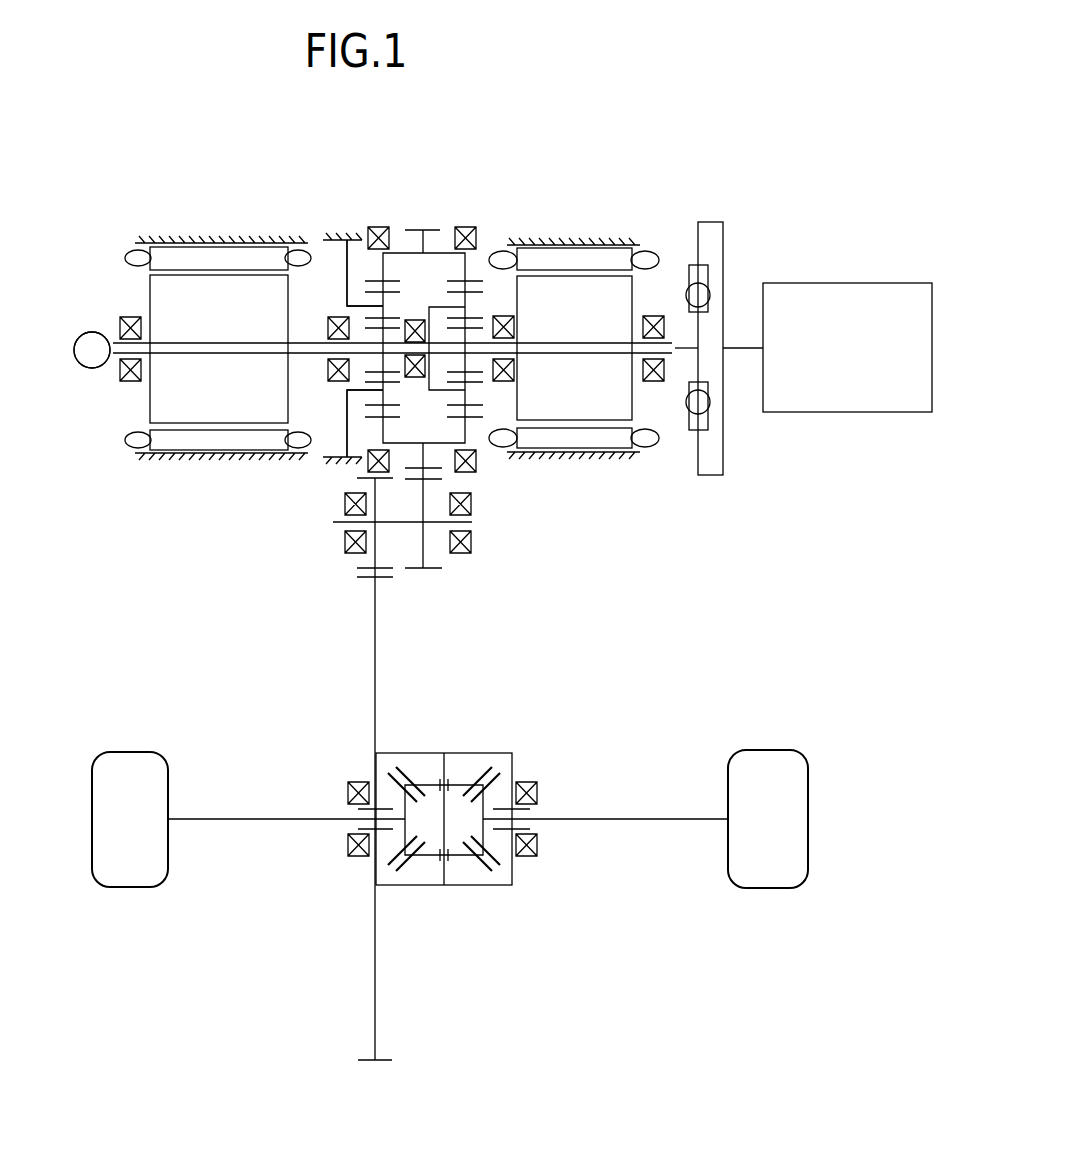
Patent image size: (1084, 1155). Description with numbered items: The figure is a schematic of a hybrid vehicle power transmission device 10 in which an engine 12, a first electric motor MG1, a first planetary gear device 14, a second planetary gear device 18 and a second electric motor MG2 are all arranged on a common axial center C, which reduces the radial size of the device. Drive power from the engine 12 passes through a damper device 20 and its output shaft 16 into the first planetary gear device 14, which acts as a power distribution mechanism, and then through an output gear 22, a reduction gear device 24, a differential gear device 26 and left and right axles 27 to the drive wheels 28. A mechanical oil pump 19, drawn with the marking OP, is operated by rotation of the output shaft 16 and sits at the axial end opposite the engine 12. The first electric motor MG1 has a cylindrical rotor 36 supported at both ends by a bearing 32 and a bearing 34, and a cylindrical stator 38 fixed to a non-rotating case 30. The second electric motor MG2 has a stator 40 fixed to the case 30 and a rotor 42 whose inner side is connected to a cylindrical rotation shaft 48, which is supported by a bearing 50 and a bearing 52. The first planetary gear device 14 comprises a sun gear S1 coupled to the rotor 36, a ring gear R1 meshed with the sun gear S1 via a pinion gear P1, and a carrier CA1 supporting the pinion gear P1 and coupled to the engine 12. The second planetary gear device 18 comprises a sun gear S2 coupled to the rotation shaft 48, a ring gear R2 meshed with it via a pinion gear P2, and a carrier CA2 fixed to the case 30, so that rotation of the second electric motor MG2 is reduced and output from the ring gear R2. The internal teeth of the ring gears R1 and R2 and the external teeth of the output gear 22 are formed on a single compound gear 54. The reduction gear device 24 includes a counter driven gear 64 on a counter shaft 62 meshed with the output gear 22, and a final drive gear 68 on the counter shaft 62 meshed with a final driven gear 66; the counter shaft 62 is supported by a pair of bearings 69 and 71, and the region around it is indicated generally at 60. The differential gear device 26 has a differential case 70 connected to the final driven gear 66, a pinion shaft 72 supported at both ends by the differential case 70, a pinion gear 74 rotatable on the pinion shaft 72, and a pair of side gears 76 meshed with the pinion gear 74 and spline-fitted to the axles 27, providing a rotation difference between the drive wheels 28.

The hybrid vehicle power transmission device 10 is at (795, 269).
The engine 12 is at (823, 297).
The first planetary gear device 14 is at (447, 310).
The output shaft 16 is at (683, 345).
The second planetary gear device 18 is at (380, 308).
The mechanical oil pump 19 is at (87, 365).
The damper device 20 is at (737, 235).
The output gear 22 is at (413, 221).
The reduction gear device 24 is at (480, 578).
The differential gear device 26 is at (442, 792).
The axles 27 is at (235, 821).
The drive wheels 28 is at (133, 762).
The case 30 is at (198, 240).
The bearing 32 is at (648, 382).
The bearing 34 is at (500, 316).
The rotor 36 is at (602, 397).
The stator 38 is at (550, 441).
The stator 40 is at (163, 446).
The rotor 42 is at (158, 300).
The rotation shaft 48 is at (303, 340).
The bearing 50 is at (337, 382).
The bearing 52 is at (128, 381).
The compound gear 54 is at (485, 215).
The counter gear mechanism 60 is at (388, 529).
The counter shaft 62 is at (336, 527).
The counter driven gear 64 is at (430, 570).
The final driven gear 66 is at (370, 1062).
The final drive gear 68 is at (388, 566).
The bearing 69 is at (357, 553).
The differential case 70 is at (423, 752).
The bearing 71 is at (468, 547).
The pinion shaft 72 is at (446, 872).
The pinion gear 74 is at (483, 772).
The side gears 76 is at (392, 785).
The axial center C is at (748, 354).
The oil pump OP is at (92, 350).
The first electric motor MG1 is at (577, 324).
The second electric motor MG2 is at (208, 344).
The ring gear R1 is at (474, 419).
The sun gear S1 is at (463, 420).
The pinion gear P1 is at (474, 406).
The carrier CA1 is at (437, 392).
The ring gear R2 is at (392, 278).
The sun gear S2 is at (370, 320).
The pinion gear P2 is at (392, 403).
The carrier CA2 is at (372, 303).